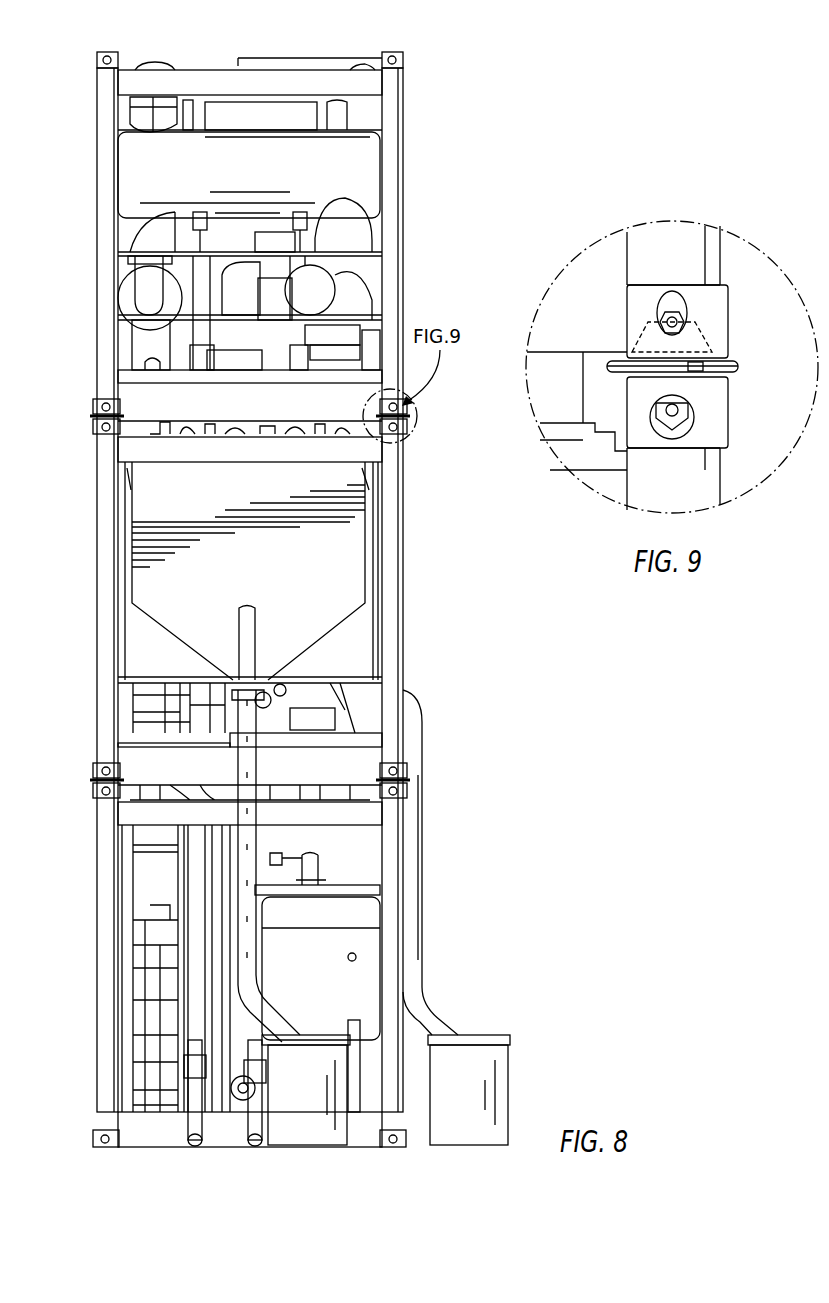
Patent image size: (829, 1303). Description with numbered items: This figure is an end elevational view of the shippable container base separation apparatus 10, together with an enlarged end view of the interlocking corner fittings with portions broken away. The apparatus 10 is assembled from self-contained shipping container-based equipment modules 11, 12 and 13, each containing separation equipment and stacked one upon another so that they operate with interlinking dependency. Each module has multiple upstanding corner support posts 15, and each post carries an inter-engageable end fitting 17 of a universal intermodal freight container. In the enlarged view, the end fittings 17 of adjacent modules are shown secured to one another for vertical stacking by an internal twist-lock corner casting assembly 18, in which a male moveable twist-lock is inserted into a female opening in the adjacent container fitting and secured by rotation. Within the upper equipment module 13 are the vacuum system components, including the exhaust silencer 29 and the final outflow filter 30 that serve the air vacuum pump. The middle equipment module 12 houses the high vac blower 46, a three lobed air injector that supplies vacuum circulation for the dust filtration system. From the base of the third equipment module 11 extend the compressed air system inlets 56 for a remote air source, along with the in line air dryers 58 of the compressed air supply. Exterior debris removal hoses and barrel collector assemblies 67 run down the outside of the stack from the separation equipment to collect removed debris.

In FIG. 8, the shippable container base separation apparatus 10 is at (292, 599).
In FIG. 8, the equipment module 11 is at (272, 1002).
In FIG. 8, the equipment module 12 is at (269, 752).
In FIG. 8, the equipment module 13 is at (287, 260).
In FIG. 8, the support post 15 is at (393, 266).
In FIG. 9, the support post 15 is at (702, 252).
In FIG. 8, the end fitting 17 is at (410, 418).
In FIG. 9, the end fitting 17 is at (747, 337).
In FIG. 9, the twist-lock corner casting assembly 18 is at (688, 322).
In FIG. 8, the exhaust silencer 29 is at (360, 172).
In FIG. 8, the final outflow filter 30 is at (128, 300).
In FIG. 8, the high vac blower 46 is at (157, 582).
In FIG. 8, the compressed air system inlets 56 is at (190, 1125).
In FIG. 8, the in line air dryer 58 is at (358, 983).
In FIG. 8, the exterior debris removal hoses and barrel collector assemblies 67 is at (264, 757).